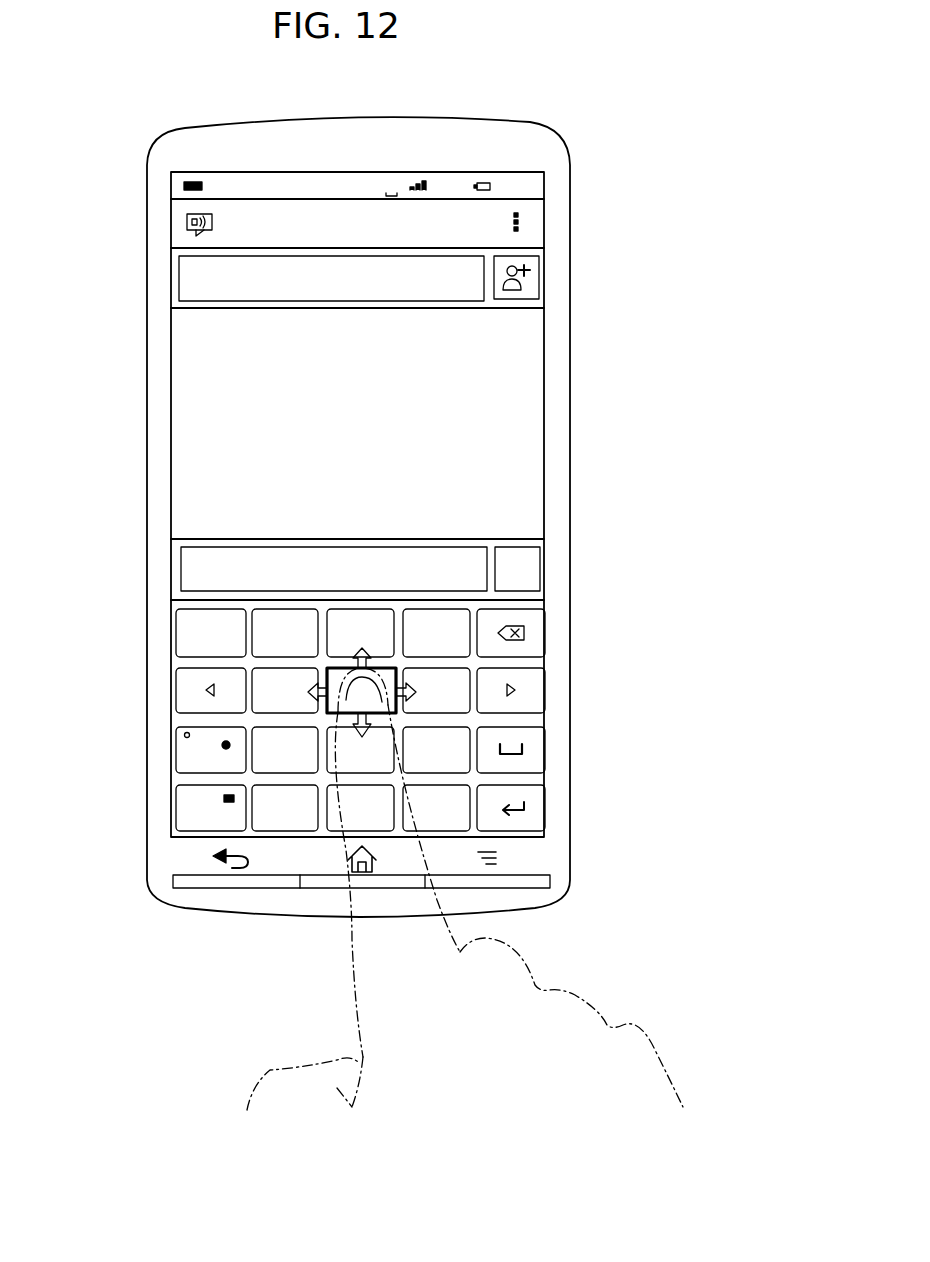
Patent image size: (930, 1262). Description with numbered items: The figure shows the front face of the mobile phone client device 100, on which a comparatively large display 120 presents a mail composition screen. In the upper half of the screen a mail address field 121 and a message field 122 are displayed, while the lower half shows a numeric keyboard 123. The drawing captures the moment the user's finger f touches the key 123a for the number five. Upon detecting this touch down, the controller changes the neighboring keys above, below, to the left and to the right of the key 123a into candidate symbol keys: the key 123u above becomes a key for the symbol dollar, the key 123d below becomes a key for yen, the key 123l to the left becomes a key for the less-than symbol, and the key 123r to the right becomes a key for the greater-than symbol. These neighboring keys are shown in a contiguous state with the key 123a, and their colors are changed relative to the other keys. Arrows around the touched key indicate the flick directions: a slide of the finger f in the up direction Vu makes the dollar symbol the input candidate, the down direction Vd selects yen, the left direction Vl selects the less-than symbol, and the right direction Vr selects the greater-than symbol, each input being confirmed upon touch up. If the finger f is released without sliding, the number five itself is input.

The mobile phone client device 100 is at (571, 89).
The display 120 is at (552, 389).
The mail address field 121 is at (226, 302).
The message field 122 is at (222, 546).
The keyboard 123 is at (364, 725).
The key above 123u is at (371, 647).
The key for the number 5 123a is at (398, 672).
The key to the right 123r is at (470, 668).
The key to the left 123l is at (263, 700).
The key below 123d is at (344, 762).
The up direction Vu is at (378, 661).
The right direction Vr is at (455, 704).
The down direction Vd is at (413, 726).
The left direction Vl is at (320, 699).
The user's finger f is at (548, 990).